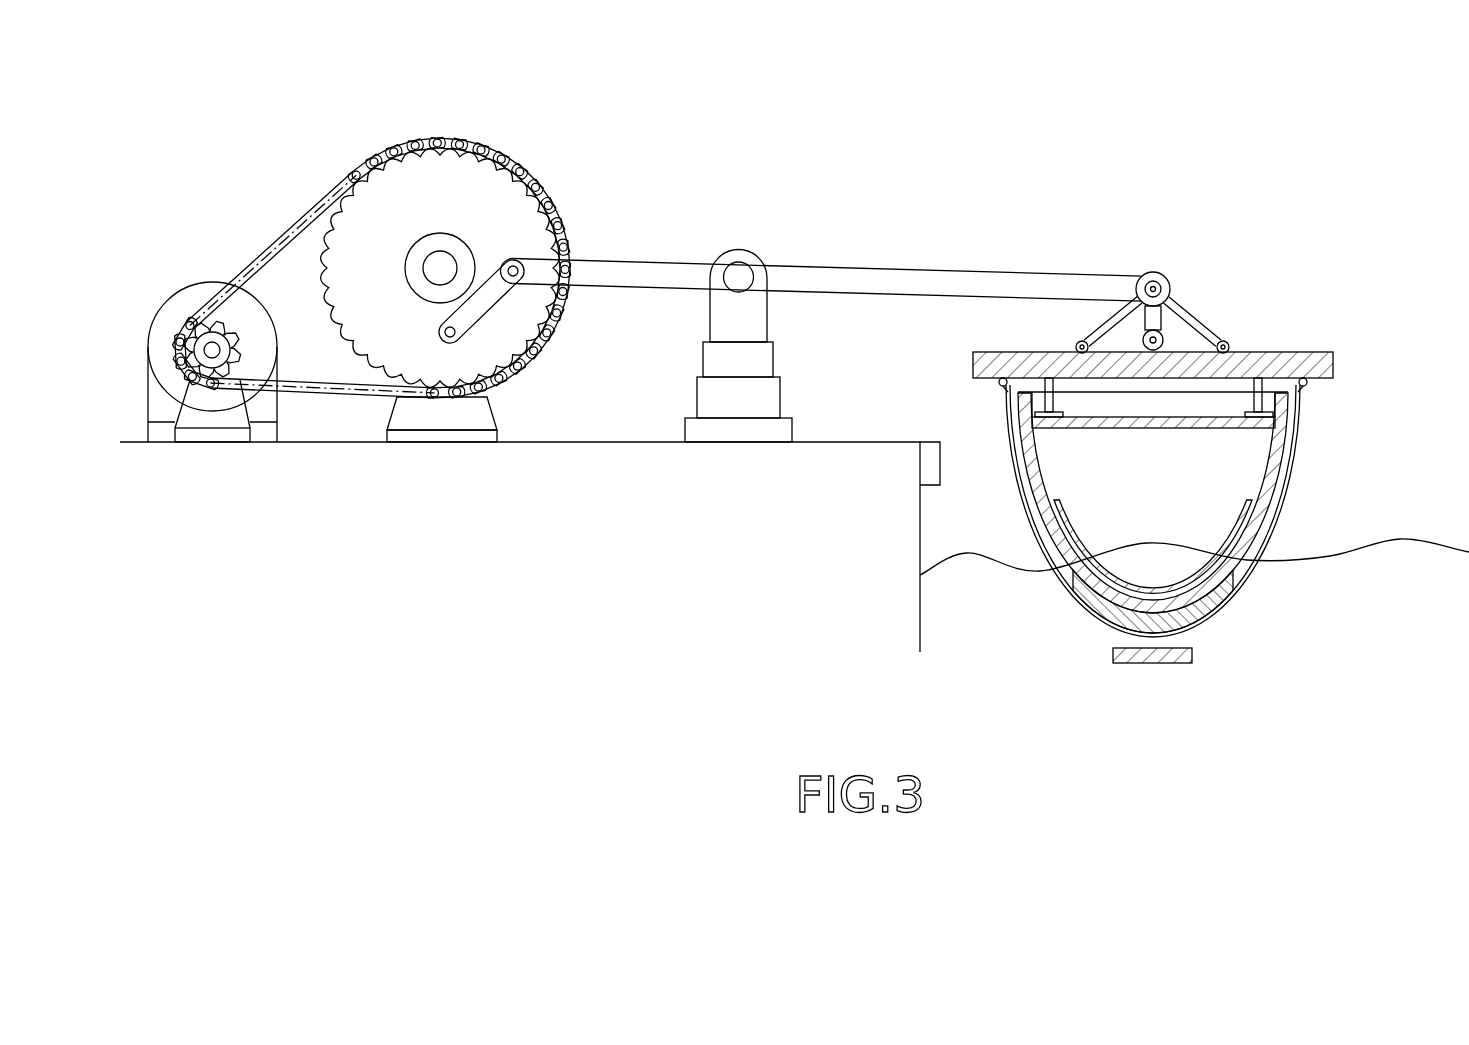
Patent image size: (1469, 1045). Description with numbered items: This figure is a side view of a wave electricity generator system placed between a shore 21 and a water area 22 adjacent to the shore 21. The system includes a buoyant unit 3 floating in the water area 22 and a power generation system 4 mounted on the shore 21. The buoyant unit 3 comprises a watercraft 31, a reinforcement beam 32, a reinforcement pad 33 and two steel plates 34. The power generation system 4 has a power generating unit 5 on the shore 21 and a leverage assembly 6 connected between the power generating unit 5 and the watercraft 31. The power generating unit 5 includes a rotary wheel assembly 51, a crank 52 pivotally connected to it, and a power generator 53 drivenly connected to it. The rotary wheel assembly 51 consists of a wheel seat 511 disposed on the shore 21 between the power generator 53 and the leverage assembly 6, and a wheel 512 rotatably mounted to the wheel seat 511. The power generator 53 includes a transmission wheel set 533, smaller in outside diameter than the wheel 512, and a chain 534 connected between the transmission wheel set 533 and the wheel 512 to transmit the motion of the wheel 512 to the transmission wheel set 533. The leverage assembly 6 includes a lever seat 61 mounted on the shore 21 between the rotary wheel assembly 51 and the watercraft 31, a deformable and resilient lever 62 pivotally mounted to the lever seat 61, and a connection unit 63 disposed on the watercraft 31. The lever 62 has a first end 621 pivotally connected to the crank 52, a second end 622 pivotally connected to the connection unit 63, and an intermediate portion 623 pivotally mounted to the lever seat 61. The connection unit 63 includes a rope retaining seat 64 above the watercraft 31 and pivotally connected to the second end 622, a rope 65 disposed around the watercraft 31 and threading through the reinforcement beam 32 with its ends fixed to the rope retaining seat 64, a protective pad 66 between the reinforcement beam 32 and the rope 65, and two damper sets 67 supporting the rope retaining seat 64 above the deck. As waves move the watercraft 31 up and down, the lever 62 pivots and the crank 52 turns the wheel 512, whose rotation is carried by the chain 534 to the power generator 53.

The buoyant unit 3 is at (1193, 543).
The watercraft 31 is at (1285, 497).
The reinforcement beam 32 is at (1182, 655).
The reinforcement pad 33 is at (1225, 592).
The steel plates 34 is at (1235, 560).
The power generation system 4 is at (354, 283).
The power generating unit 5 is at (330, 283).
The rotary wheel assembly 51 is at (442, 283).
The wheel seat 511 is at (443, 424).
The wheel 512 is at (478, 190).
The crank 52 is at (482, 302).
The power generator 53 is at (183, 303).
The transmission wheel set 533 is at (165, 356).
The chain 534 is at (188, 318).
The leverage assembly 6 is at (738, 323).
The lever seat 61 is at (738, 402).
The lever 62 is at (835, 284).
The first end 621 is at (540, 272).
The second end 622 is at (1117, 292).
The intermediate portion 623 is at (790, 286).
The connection unit 63 is at (1180, 426).
The rope retaining seat 64 is at (1292, 364).
The rope 65 is at (1305, 406).
The protective pad 66 is at (1215, 622).
The damper sets 67 is at (1063, 391).
The shore 21 is at (850, 465).
The water area 22 is at (1420, 548).